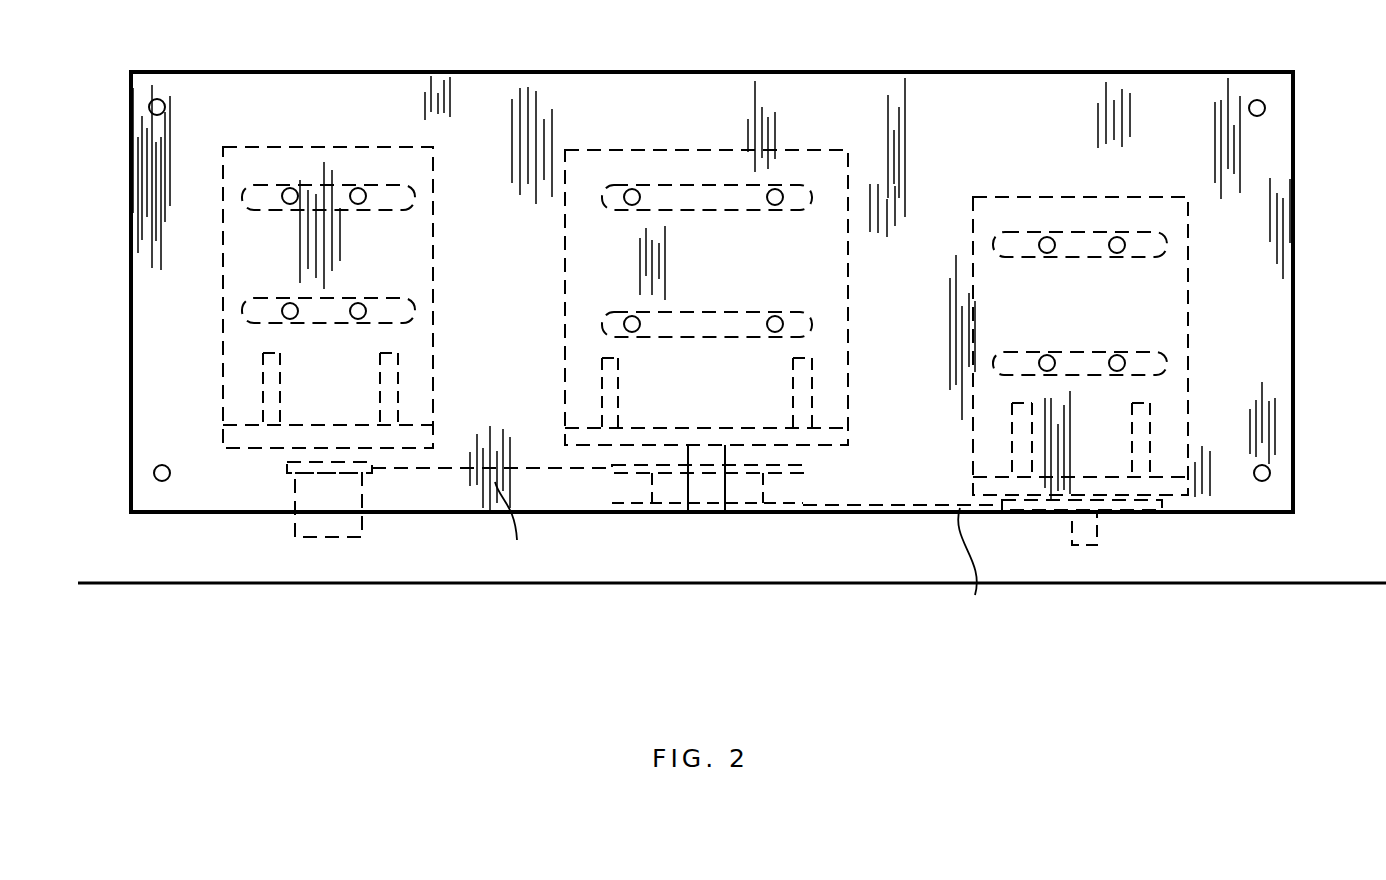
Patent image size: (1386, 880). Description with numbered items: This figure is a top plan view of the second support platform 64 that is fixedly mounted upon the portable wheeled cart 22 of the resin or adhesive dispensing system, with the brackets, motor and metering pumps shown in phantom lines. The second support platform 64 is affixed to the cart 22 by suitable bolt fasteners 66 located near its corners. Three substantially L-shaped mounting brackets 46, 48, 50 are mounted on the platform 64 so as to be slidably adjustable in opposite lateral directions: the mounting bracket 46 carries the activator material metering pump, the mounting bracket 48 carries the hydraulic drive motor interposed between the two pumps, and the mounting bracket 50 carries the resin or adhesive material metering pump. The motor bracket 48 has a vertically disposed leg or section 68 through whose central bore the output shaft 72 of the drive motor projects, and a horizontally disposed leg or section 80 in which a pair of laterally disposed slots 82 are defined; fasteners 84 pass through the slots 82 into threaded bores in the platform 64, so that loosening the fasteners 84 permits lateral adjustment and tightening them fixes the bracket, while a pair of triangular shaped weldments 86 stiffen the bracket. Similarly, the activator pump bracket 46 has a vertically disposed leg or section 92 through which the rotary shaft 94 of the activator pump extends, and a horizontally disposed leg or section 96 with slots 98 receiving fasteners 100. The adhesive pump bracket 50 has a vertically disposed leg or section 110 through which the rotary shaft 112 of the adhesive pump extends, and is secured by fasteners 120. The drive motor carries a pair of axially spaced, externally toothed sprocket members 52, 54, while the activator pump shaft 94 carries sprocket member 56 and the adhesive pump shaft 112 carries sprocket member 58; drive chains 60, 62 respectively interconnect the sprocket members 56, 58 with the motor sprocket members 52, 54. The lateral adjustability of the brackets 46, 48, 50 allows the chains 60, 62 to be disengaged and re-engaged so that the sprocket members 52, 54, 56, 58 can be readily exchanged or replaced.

The portable wheeled cart 22 is at (1385, 502).
The mounting bracket 46 is at (410, 253).
The mounting bracket 48 is at (855, 250).
The mounting bracket 50 is at (1160, 280).
The sprocket member 52 is at (805, 483).
The sprocket member 54 is at (805, 512).
The sprocket member 56 is at (290, 465).
The sprocket member 58 is at (1180, 510).
The drive chain 60 is at (513, 525).
The drive chain 62 is at (976, 570).
The second support platform 64 is at (1264, 336).
The bolt fasteners 66 is at (150, 103).
The vertically disposed leg or section 68 is at (660, 432).
The output shaft 72 is at (685, 490).
The horizontally disposed leg or section 80 is at (724, 266).
The slots 82 is at (710, 183).
The fasteners 84 is at (630, 188).
The triangular shaped weldments 86 is at (605, 388).
The vertically disposed leg or section 92 is at (425, 430).
The rotary shaft 94 is at (350, 493).
The horizontally disposed leg or section 96 is at (350, 386).
The slots 98 is at (405, 183).
The fasteners 100 is at (288, 190).
The vertically disposed leg or section 110 is at (1160, 498).
The rotary shaft 112 is at (1105, 395).
The fasteners 120 is at (1045, 238).